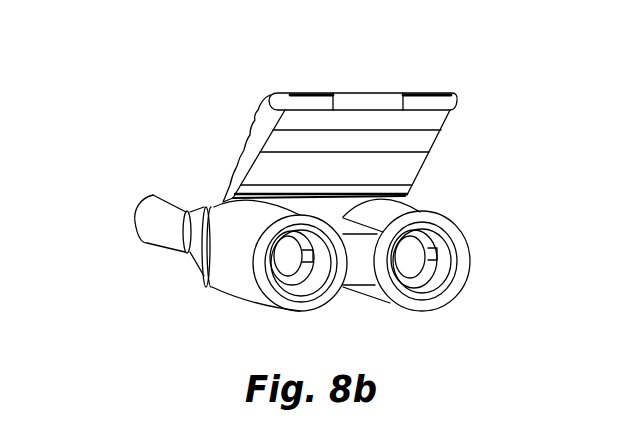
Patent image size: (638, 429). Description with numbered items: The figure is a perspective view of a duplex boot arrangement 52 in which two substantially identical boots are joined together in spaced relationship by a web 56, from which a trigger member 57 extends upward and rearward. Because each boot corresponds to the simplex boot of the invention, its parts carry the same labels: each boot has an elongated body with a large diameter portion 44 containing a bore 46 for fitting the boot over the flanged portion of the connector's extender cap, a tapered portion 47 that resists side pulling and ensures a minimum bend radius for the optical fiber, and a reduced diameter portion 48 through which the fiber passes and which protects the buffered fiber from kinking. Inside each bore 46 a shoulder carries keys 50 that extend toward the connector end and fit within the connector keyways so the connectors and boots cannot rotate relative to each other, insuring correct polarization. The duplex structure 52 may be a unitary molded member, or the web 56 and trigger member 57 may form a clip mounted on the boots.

The large diameter portion 44 is at (243, 276).
The bore 46 is at (440, 278).
The tapered portion 47 is at (191, 244).
The reduced diameter portion 48 is at (160, 232).
The keys 50 is at (436, 253).
The duplex boot arrangement 52 is at (189, 168).
The web 56 is at (360, 273).
The trigger member 57 is at (293, 92).